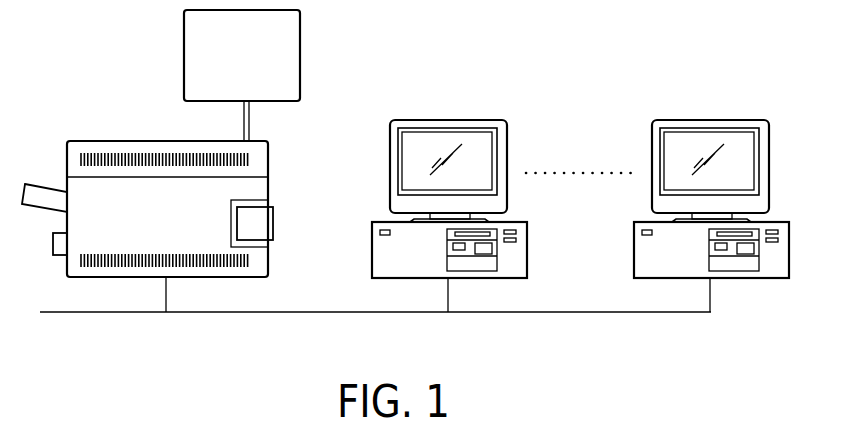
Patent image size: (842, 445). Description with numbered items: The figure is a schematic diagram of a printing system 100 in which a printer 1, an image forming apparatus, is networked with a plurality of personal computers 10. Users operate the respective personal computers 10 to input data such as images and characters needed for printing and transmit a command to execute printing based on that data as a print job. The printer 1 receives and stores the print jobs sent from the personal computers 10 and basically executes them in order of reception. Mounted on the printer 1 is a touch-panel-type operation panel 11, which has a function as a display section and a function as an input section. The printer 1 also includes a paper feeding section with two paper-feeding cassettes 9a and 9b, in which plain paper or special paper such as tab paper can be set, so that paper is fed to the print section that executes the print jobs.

The printing system 100 is at (417, 36).
The printer 1 is at (270, 182).
The paper-feeding cassette 9a is at (33, 184).
The paper-feeding cassette 9b is at (55, 257).
The personal computer 10 is at (487, 120).
The operation panel 11 is at (303, 49).